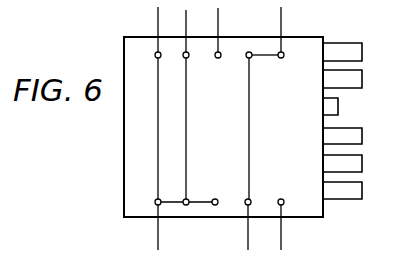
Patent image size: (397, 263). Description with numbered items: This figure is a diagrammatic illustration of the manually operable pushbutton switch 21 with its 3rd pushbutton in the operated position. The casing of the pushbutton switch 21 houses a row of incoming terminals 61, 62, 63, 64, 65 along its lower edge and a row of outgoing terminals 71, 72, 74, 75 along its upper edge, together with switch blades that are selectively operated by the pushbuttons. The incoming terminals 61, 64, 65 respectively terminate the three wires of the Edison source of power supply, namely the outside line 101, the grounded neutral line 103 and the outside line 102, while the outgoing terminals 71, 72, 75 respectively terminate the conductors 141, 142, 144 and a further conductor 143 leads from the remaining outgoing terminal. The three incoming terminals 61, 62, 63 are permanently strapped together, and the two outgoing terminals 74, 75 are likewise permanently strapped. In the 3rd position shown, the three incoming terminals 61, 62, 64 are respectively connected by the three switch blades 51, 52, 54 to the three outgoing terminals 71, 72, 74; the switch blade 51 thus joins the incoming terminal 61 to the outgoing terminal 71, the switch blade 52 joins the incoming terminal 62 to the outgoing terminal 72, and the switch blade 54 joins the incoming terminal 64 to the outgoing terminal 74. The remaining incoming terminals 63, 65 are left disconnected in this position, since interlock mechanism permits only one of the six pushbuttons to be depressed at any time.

The pushbutton switch 21 is at (226, 143).
The conductor 141 is at (158, 31).
The conductor 142 is at (186, 31).
The conductor 143 is at (218, 30).
The conductor 144 is at (281, 30).
The outgoing terminal 71 is at (161, 57).
The outgoing terminal 72 is at (189, 57).
The outgoing terminal 74 is at (251, 58).
The outgoing terminal 75 is at (284, 56).
The switch blade 51 is at (158, 118).
The switch blade 52 is at (186, 118).
The switch blade 54 is at (249, 118).
The incoming terminal 61 is at (159, 199).
The incoming terminal 62 is at (187, 199).
The incoming terminal 63 is at (216, 199).
The incoming terminal 64 is at (249, 199).
The incoming terminal 65 is at (282, 199).
The outside line 101 is at (158, 246).
The outside line 102 is at (281, 246).
The grounded neutral line 103 is at (248, 246).